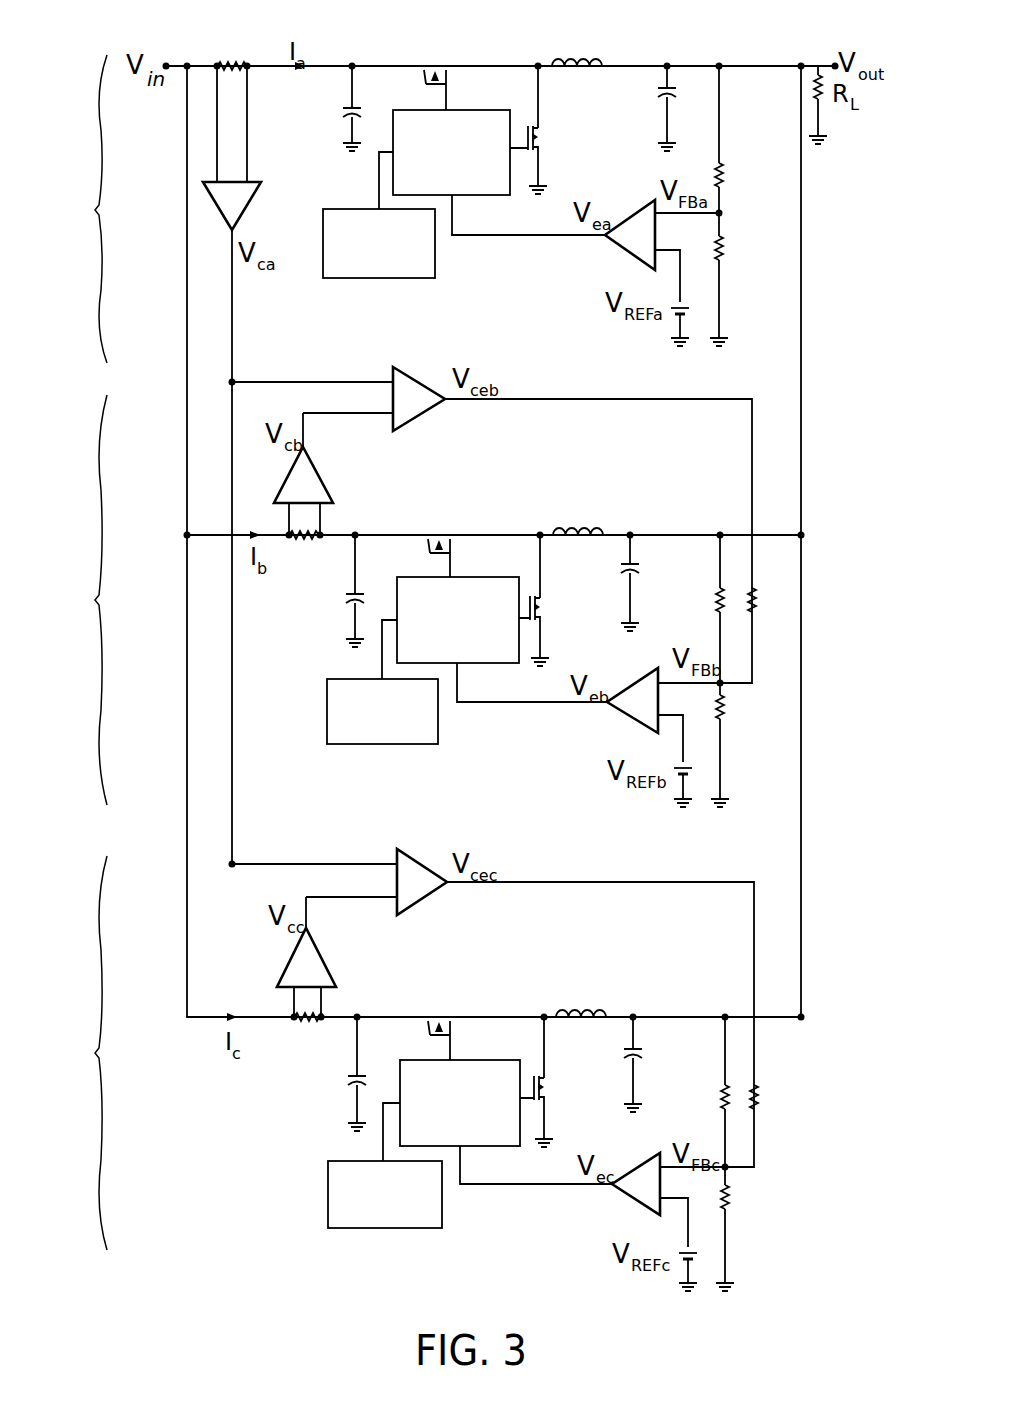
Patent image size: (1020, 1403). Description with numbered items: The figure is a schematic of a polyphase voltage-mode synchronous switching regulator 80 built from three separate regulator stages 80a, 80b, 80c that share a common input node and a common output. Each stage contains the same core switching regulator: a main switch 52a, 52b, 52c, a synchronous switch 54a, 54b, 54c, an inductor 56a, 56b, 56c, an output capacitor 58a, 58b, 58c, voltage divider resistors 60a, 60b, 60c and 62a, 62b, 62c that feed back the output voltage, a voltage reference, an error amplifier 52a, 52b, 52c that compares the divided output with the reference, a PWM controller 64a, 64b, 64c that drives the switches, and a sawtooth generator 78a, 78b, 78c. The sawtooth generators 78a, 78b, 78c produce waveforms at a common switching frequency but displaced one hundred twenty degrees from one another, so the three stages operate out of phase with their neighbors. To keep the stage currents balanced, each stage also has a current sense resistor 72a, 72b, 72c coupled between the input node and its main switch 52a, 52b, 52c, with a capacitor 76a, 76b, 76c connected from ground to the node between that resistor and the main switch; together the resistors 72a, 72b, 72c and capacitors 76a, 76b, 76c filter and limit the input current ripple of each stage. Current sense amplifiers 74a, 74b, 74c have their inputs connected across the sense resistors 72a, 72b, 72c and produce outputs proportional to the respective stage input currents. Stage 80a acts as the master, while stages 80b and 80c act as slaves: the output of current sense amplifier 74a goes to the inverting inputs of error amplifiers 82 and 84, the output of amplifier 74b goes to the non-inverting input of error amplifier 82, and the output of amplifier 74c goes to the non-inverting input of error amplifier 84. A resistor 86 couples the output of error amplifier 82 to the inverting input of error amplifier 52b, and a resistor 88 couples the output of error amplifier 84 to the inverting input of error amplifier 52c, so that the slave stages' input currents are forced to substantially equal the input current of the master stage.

The polyphase synchronous switching regulator 80 is at (488, 40).
The regulator stage 80a is at (81, 209).
The regulator stage 80b is at (82, 600).
The regulator stage 80c is at (83, 1053).
The current sense resistor 72a is at (234, 55).
The current sense resistor 72b is at (308, 549).
The current sense resistor 72c is at (309, 1031).
The current sense amplifier 74a is at (255, 200).
The current sense amplifier 74b is at (326, 483).
The current sense amplifier 74c is at (322, 945).
The capacitor 76a is at (334, 108).
The capacitor 76b is at (338, 591).
The capacitor 76c is at (339, 1074).
The main switch and error amplifier 52a is at (608, 242).
The main switch and error amplifier 52b is at (612, 710).
The main switch and error amplifier 52c is at (617, 1192).
The synchronous switch 54a is at (547, 130).
The synchronous switch 54b is at (552, 600).
The synchronous switch 54c is at (553, 1082).
The inductor 56a is at (577, 51).
The inductor 56b is at (578, 520).
The inductor 56c is at (581, 1002).
The output capacitor 58a is at (648, 108).
The output capacitor 58b is at (611, 583).
The output capacitor 58c is at (656, 1064).
The voltage divider resistor 60a is at (741, 139).
The voltage divider resistor 60b is at (698, 609).
The voltage divider resistor 60c is at (707, 1092).
The voltage divider resistor 62a is at (738, 279).
The voltage divider resistor 62b is at (740, 745).
The voltage divider resistor 62c is at (743, 1229).
The PWM controller 64a is at (446, 110).
The PWM controller 64b is at (483, 664).
The PWM controller 64c is at (483, 1147).
The sawtooth generator 78a is at (357, 280).
The sawtooth generator 78b is at (383, 746).
The sawtooth generator 78c is at (328, 1196).
The error amplifier 82 is at (428, 417).
The error amplifier 84 is at (430, 900).
The resistor 86 is at (770, 600).
The resistor 88 is at (772, 1097).